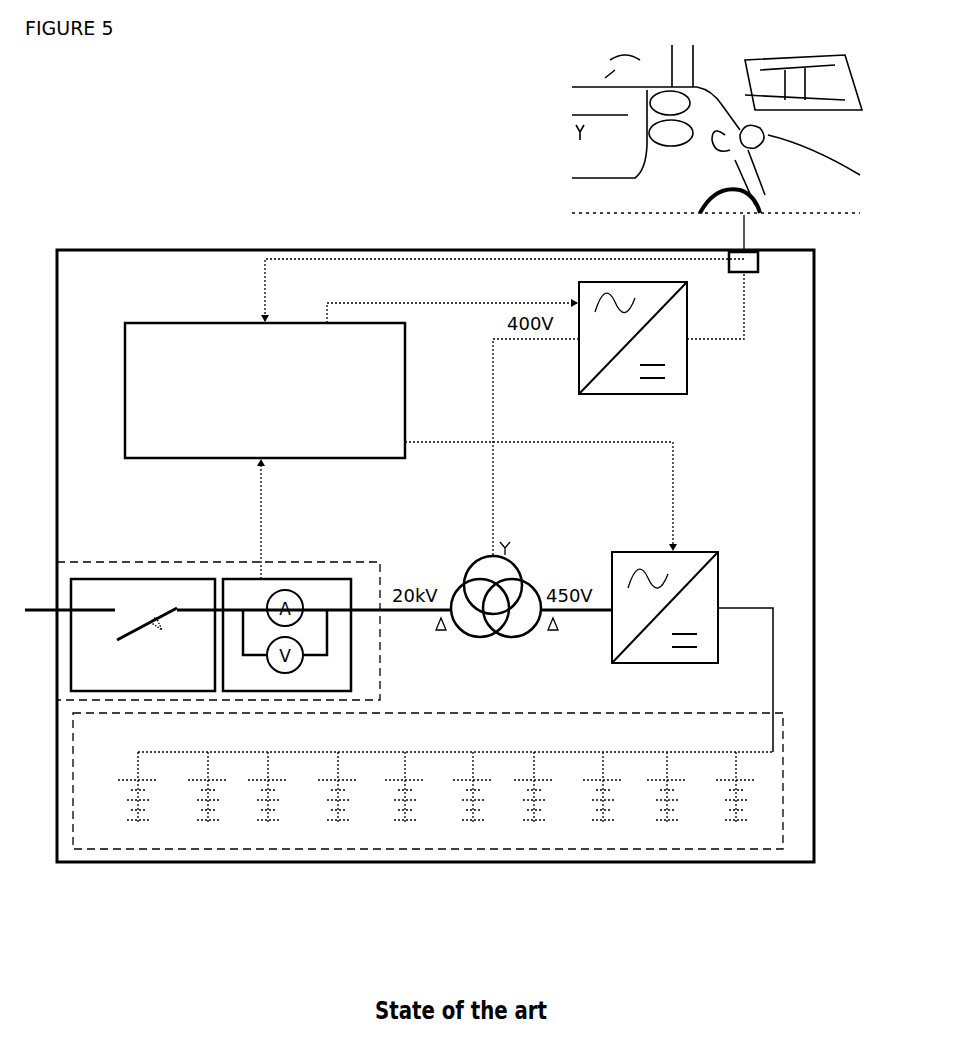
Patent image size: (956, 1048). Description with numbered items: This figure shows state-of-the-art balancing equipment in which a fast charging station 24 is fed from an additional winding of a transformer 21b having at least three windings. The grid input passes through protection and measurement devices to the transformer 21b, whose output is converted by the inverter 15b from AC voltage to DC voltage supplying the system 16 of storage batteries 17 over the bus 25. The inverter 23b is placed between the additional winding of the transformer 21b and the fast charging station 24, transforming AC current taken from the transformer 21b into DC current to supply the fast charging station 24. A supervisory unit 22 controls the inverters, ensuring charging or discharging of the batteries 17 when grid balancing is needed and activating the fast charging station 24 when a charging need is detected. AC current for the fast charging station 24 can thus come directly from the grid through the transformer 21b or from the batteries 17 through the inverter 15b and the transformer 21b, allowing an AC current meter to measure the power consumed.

The supervisory unit 22 is at (265, 390).
The fast charging station 24 is at (752, 273).
The inverter 23b is at (667, 394).
The transformer 21b is at (527, 545).
The inverter 15b is at (612, 650).
The bus 25 is at (773, 732).
The batteries 17 is at (143, 822).
The system of batteries 16 is at (428, 828).